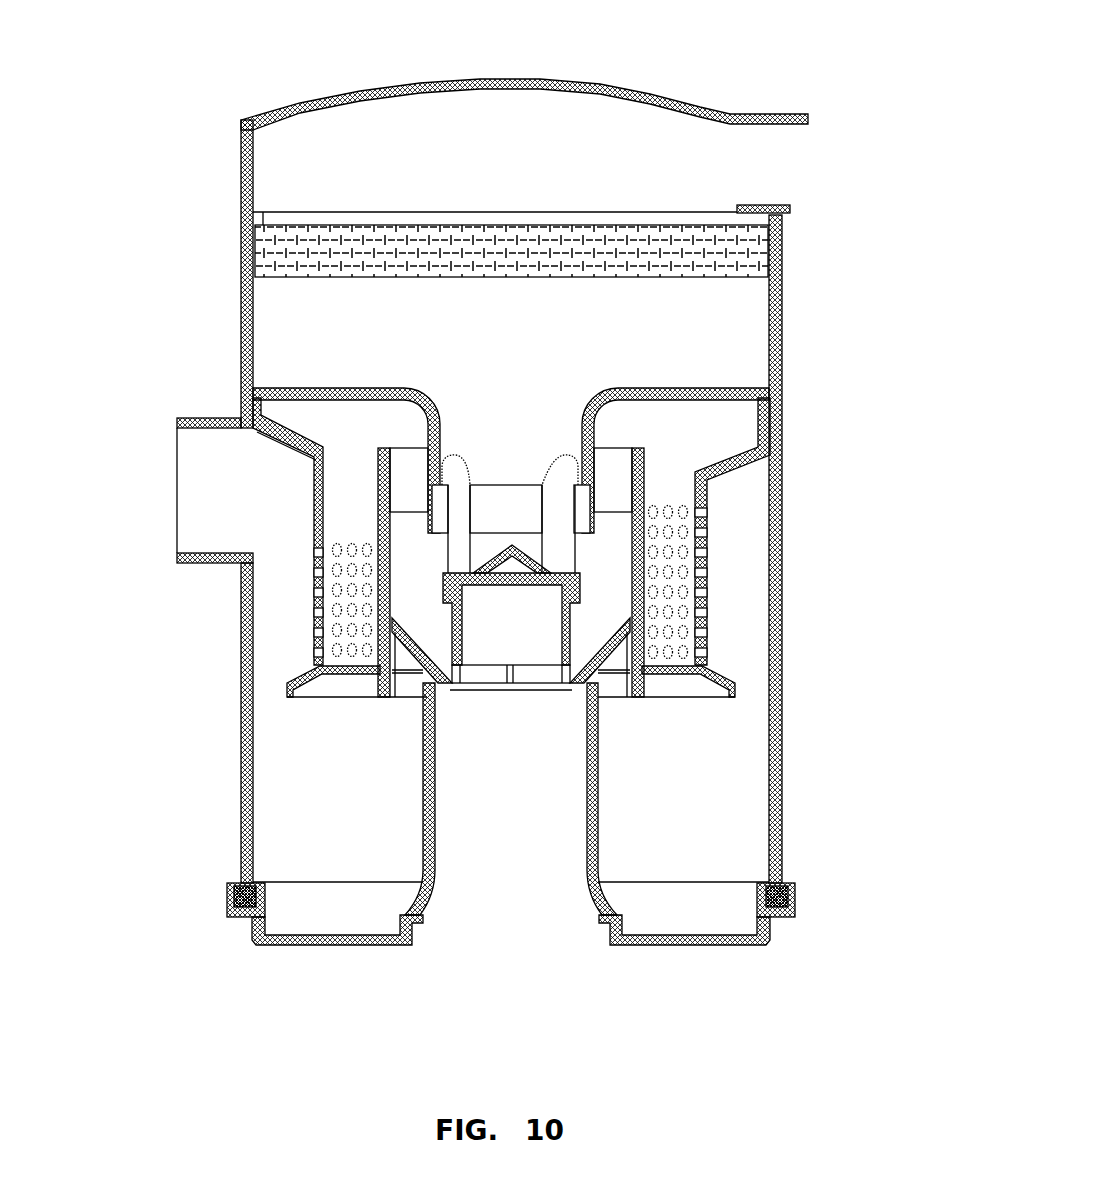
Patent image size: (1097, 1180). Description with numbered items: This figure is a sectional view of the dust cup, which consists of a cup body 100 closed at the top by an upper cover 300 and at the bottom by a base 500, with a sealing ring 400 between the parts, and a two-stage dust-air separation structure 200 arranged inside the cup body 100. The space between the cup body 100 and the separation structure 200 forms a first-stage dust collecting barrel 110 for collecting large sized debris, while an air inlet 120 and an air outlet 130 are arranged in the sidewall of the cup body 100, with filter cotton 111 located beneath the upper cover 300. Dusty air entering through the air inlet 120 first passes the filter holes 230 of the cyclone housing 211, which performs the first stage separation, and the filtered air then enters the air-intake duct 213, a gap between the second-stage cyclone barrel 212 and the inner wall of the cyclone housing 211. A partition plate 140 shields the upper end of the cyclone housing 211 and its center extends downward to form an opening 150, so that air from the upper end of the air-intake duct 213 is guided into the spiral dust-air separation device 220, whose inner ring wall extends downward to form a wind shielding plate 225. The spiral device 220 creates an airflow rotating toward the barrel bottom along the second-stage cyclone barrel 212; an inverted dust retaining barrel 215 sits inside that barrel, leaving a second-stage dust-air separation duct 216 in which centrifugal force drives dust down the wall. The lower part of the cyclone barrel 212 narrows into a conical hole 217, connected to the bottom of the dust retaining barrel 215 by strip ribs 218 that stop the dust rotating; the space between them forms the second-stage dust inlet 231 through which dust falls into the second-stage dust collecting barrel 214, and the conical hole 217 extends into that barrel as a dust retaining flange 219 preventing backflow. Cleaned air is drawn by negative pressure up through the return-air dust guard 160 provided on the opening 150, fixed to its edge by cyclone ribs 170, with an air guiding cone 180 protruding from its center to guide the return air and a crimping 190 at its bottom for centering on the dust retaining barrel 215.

The cup body 100 is at (247, 243).
The first-stage dust collecting barrel 110 is at (330, 800).
The filter cotton 111 is at (350, 250).
The air inlet 120 is at (215, 492).
The air outlet 130 is at (743, 170).
The partition plate 140 is at (552, 508).
The opening 150 is at (538, 437).
The return-air dust guard 160 is at (577, 593).
The cyclone rib 170 is at (545, 530).
The air guiding cone 180 is at (527, 548).
The crimping 190 is at (573, 637).
The two-stage dust-air separation structure 200 is at (313, 650).
The cyclone housing 211 is at (312, 517).
The second-stage cyclone barrel 212 is at (378, 527).
The air-intake duct 213 is at (380, 445).
The second-stage dust collecting barrel 214 is at (525, 795).
The dust retaining barrel 215 is at (700, 603).
The second-stage dust-air separation duct 216 is at (425, 590).
The conical hole 217 is at (535, 700).
The strip rib 218 is at (602, 686).
The dust retaining flange 219 is at (410, 697).
The spiral dust-air separation device 220 is at (485, 441).
The wind shielding plate 225 is at (230, 417).
The filter hole 230 is at (378, 550).
The second-stage dust inlet 231 is at (487, 675).
The upper cover 300 is at (583, 87).
The sealing ring 400 is at (605, 903).
The base 500 is at (770, 932).